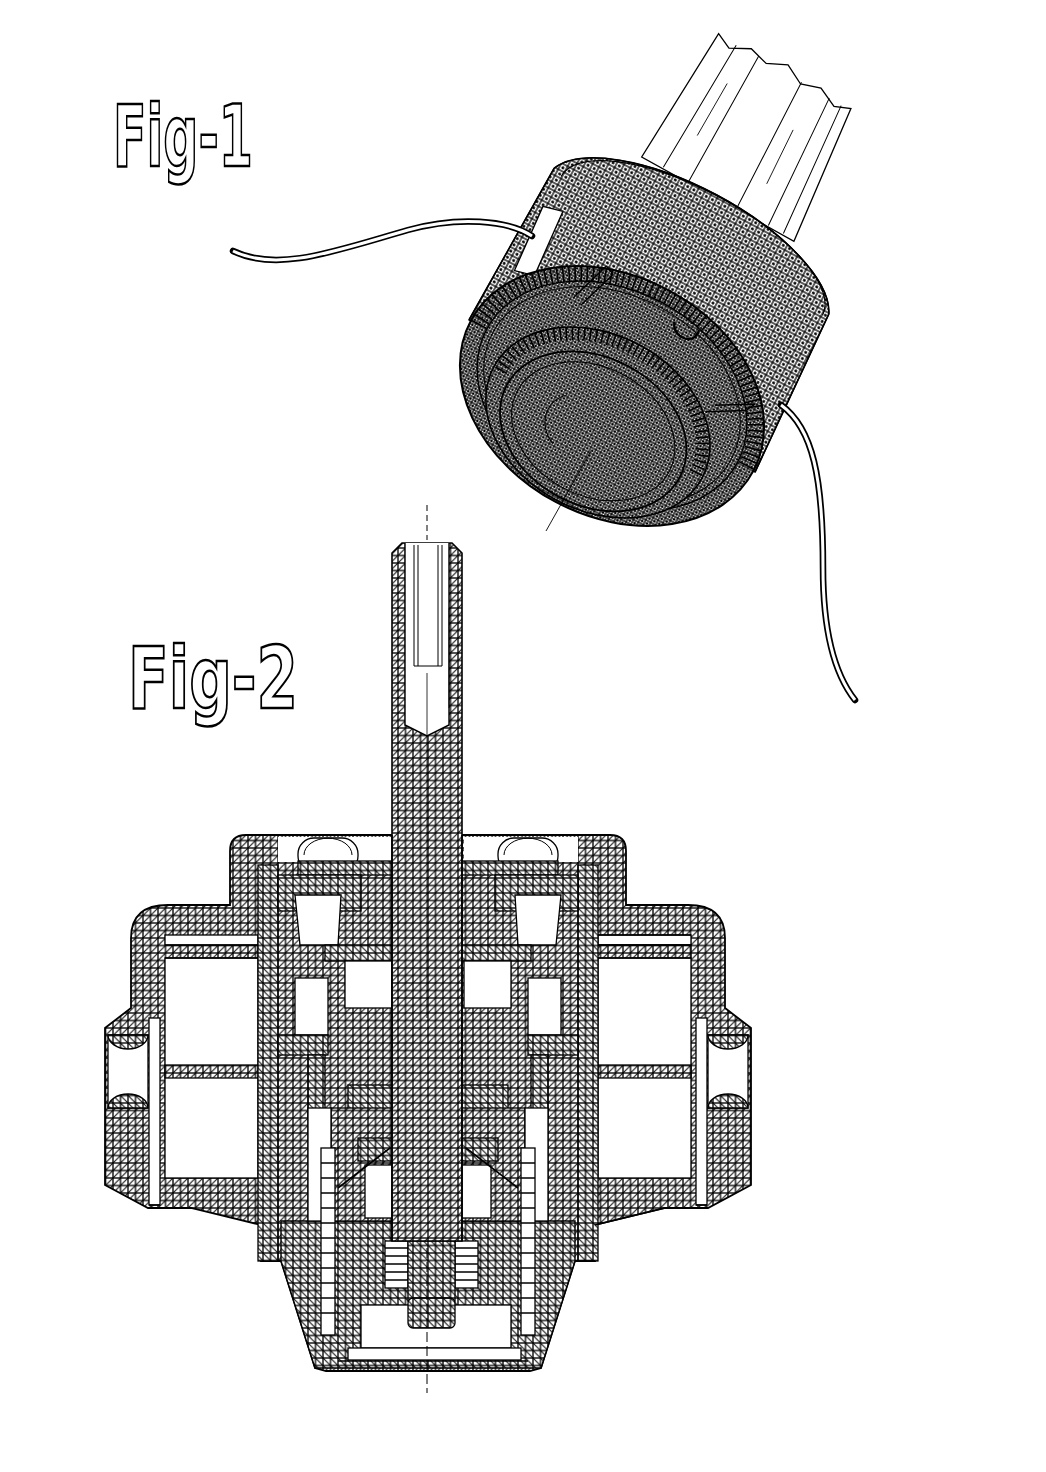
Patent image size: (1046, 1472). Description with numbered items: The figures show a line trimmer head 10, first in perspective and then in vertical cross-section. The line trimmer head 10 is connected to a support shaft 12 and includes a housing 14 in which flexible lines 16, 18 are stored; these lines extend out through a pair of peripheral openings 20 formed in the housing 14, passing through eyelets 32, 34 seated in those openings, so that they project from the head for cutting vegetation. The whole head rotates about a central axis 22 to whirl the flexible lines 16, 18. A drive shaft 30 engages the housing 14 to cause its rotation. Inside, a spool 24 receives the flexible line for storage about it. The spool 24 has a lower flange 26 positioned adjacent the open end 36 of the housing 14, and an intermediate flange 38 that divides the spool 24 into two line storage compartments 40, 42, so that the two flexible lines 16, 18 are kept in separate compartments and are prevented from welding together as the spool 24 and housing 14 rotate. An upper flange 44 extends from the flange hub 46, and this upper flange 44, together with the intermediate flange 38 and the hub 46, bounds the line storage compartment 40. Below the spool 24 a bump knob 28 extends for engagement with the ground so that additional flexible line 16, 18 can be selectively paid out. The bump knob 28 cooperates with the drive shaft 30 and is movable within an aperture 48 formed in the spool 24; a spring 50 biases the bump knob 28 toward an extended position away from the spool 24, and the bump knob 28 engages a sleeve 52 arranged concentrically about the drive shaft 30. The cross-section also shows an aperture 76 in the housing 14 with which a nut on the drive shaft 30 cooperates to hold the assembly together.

In FIG. 1, the line trimmer head 10 is at (458, 116).
In FIG. 2, the line trimmer head 10 is at (656, 790).
In FIG. 1, the support shaft 12 is at (752, 133).
In FIG. 1, the housing 14 is at (824, 345).
In FIG. 2, the housing 14 is at (723, 967).
In FIG. 1, the flexible line 16 is at (822, 548).
In FIG. 1, the flexible line 18 is at (351, 236).
In FIG. 1, the peripheral openings 20 is at (525, 222).
In FIG. 2, the peripheral openings 20 is at (117, 1066).
In FIG. 1, the central axis 22 is at (560, 497).
In FIG. 2, the central axis 22 is at (427, 892).
In FIG. 1, the spool 24 is at (722, 472).
In FIG. 2, the spool 24 is at (633, 1228).
In FIG. 1, the lower flange 26 is at (458, 328).
In FIG. 2, the lower flange 26 is at (660, 1183).
In FIG. 1, the bump knob 28 is at (550, 444).
In FIG. 2, the bump knob 28 is at (580, 1349).
In FIG. 2, the drive shaft 30 is at (455, 661).
In FIG. 2, the eyelet 32 is at (112, 1035).
In FIG. 2, the eyelet 34 is at (745, 1037).
In FIG. 2, the open end 36 is at (153, 1199).
In FIG. 2, the intermediate flange 38 is at (202, 1066).
In FIG. 2, the line storage compartment 40 is at (203, 960).
In FIG. 2, the line storage compartment 42 is at (190, 1166).
In FIG. 2, the upper flange 44 is at (660, 932).
In FIG. 2, the flange hub 46 is at (591, 906).
In FIG. 2, the aperture 48 is at (585, 1270).
In FIG. 2, the spring 50 is at (320, 1276).
In FIG. 2, the sleeve 52 is at (346, 1181).
In FIG. 2, the aperture 76 is at (478, 846).